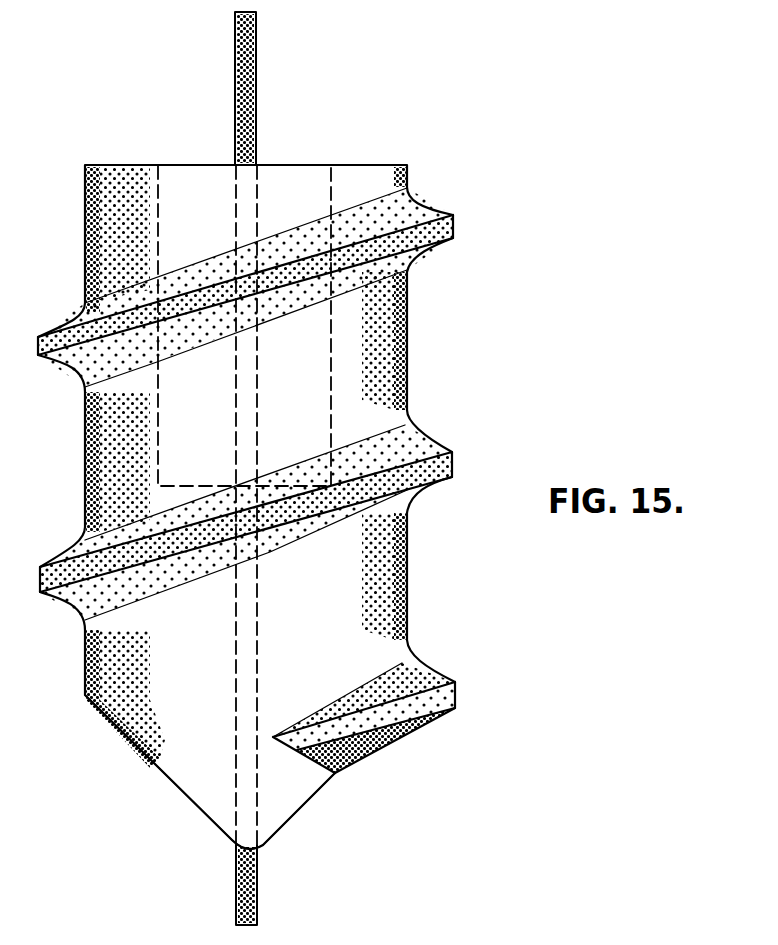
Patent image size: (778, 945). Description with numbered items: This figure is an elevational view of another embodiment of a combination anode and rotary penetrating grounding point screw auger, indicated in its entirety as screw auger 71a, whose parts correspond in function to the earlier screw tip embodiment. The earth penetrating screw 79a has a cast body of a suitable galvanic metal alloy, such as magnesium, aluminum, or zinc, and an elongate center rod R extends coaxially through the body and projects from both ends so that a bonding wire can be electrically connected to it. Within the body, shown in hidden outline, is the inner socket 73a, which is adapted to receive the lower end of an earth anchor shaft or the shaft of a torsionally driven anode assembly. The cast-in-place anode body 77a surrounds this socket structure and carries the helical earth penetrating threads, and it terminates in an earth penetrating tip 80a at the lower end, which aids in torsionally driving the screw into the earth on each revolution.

The center rod R is at (258, 42).
The screw auger 71a is at (414, 361).
The inner socket 73a is at (328, 193).
The earth penetrating screw 79a is at (427, 436).
The cast-in-place anode body 77a is at (410, 597).
The earth penetrating tip 80a is at (232, 843).